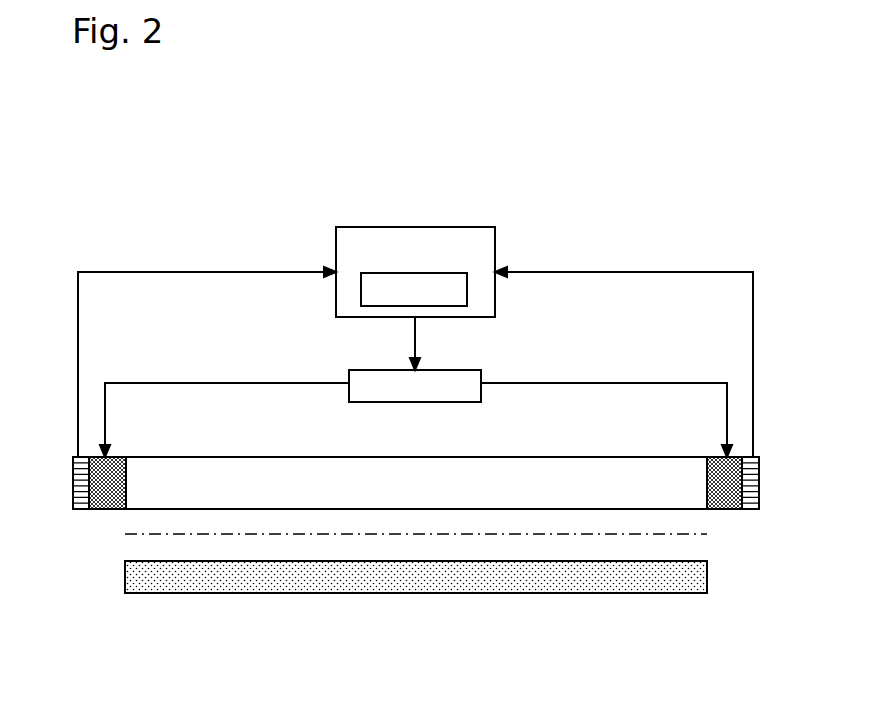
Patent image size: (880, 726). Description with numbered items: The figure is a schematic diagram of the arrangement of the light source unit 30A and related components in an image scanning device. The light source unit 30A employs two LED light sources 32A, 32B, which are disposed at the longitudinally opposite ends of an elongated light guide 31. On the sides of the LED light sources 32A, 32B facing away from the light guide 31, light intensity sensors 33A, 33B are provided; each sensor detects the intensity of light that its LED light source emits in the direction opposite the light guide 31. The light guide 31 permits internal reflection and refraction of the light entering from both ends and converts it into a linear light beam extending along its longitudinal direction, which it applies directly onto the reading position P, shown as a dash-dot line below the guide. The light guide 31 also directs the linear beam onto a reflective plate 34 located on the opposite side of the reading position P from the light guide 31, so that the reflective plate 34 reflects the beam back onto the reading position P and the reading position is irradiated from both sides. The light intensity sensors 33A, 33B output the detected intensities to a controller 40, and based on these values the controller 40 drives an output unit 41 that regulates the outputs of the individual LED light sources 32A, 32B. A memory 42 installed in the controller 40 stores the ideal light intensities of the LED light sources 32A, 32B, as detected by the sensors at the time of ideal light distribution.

The controller 40 is at (390, 226).
The memory 42 is at (467, 296).
The output unit 41 is at (375, 370).
The light guide 31 is at (502, 475).
The light source unit 30A is at (598, 454).
The LED light source 32A is at (107, 497).
The LED light source 32B is at (727, 500).
The light intensity sensor 33A is at (78, 473).
The light intensity sensor 33B is at (752, 477).
The reading position P is at (232, 535).
The reflective plate 34 is at (433, 582).